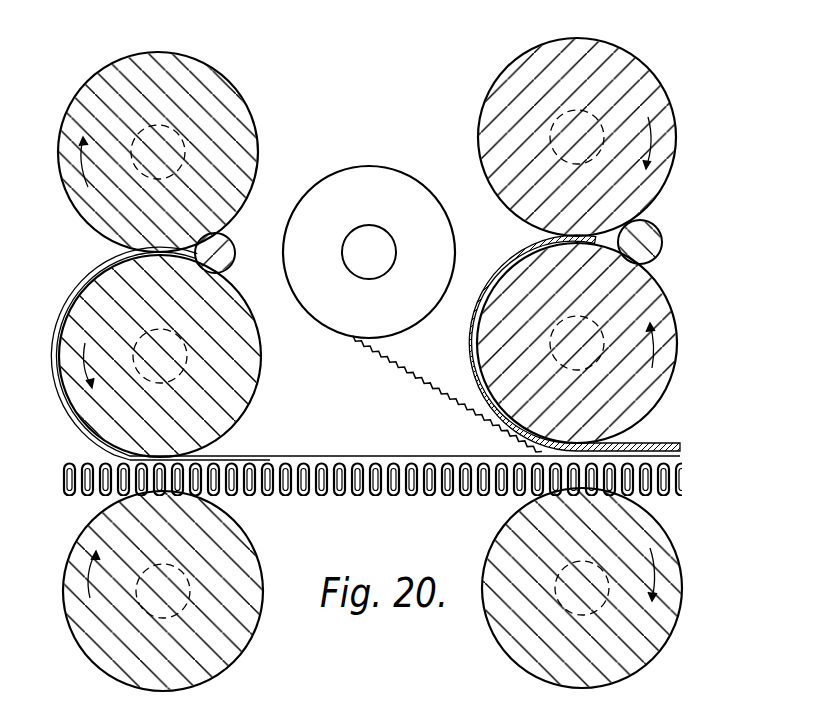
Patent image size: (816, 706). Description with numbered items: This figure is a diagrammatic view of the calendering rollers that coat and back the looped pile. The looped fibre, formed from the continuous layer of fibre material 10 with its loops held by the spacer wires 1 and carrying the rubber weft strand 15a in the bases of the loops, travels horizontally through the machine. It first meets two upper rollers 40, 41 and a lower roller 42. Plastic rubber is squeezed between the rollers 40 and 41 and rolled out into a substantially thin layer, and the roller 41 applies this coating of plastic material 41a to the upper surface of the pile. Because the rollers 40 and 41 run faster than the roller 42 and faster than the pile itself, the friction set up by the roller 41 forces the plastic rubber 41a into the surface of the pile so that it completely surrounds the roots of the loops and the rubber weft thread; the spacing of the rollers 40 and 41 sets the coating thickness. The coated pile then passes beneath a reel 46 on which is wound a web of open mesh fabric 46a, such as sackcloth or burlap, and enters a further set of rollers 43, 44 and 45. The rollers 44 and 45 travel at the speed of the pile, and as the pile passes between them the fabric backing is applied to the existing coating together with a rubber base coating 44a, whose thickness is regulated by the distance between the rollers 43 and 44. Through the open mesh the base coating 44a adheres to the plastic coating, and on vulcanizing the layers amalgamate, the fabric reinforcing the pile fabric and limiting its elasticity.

The upper roller 40 is at (258, 152).
The upper roller 41 is at (262, 347).
The lower roller 42 is at (262, 581).
The roller 43 is at (487, 96).
The roller 44 is at (517, 272).
The roller 45 is at (488, 576).
The reel 46 is at (390, 185).
The web of open mesh fabric 46a is at (441, 392).
The base coating 44a is at (667, 455).
The coating of plastic material 41a is at (330, 458).
The strand 15a is at (266, 459).
The material for forming the loops 10 is at (424, 460).
The spacer wires 1 is at (306, 492).